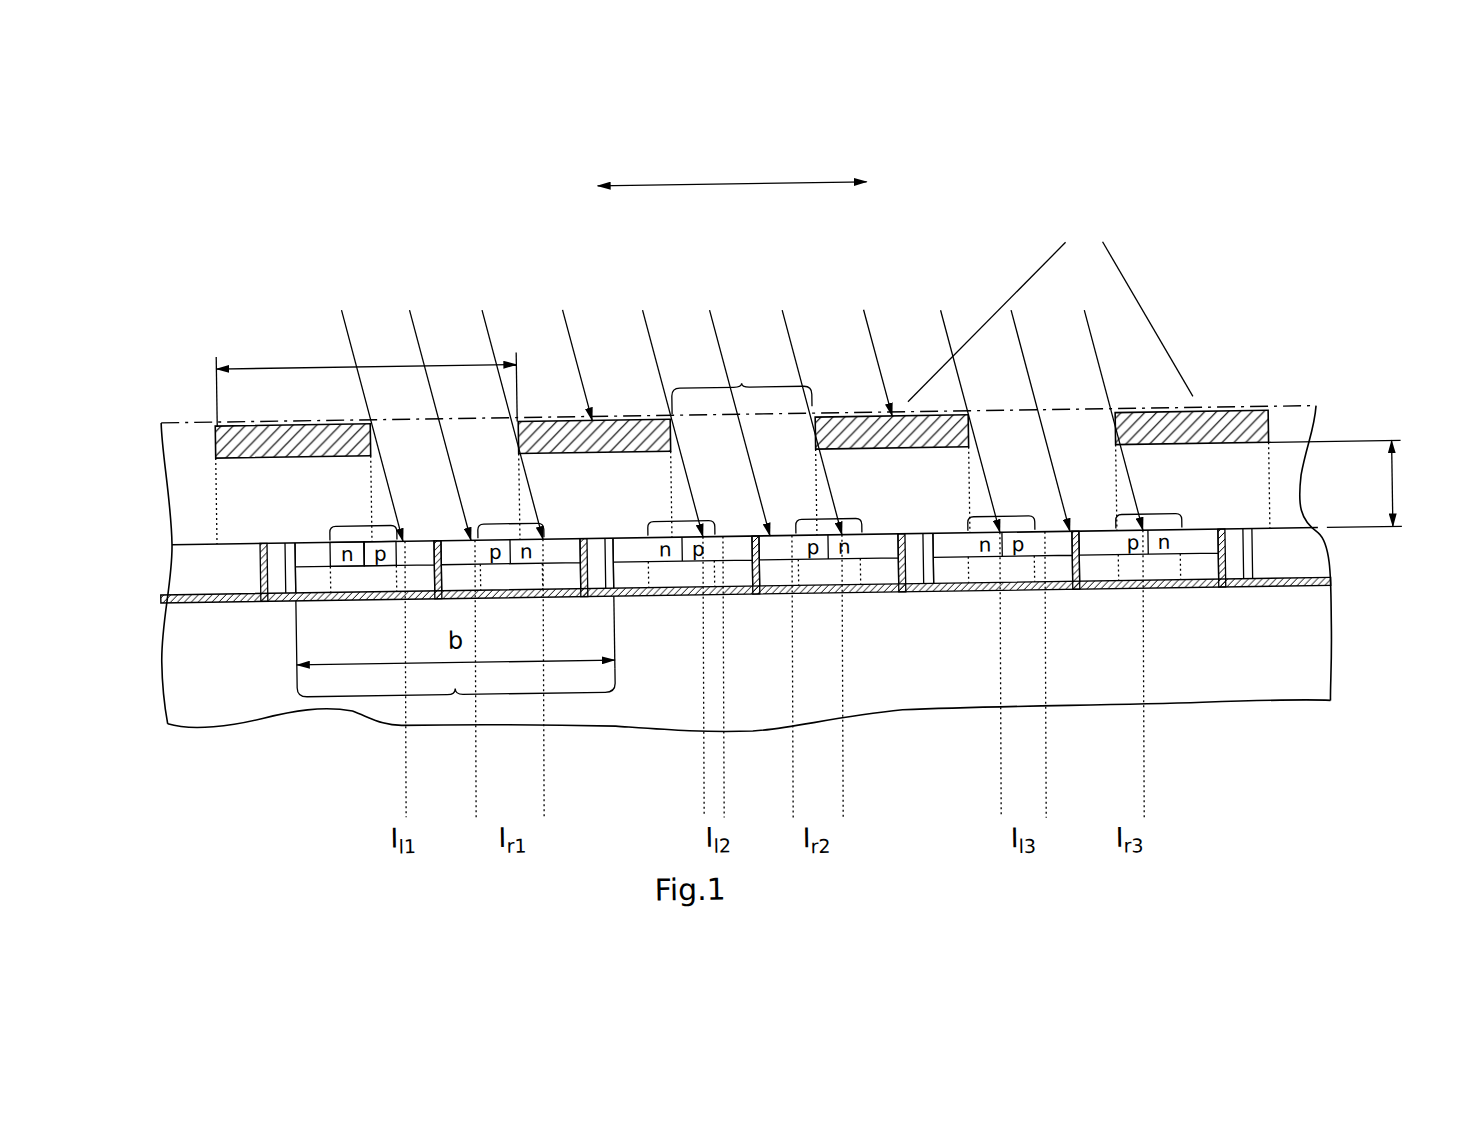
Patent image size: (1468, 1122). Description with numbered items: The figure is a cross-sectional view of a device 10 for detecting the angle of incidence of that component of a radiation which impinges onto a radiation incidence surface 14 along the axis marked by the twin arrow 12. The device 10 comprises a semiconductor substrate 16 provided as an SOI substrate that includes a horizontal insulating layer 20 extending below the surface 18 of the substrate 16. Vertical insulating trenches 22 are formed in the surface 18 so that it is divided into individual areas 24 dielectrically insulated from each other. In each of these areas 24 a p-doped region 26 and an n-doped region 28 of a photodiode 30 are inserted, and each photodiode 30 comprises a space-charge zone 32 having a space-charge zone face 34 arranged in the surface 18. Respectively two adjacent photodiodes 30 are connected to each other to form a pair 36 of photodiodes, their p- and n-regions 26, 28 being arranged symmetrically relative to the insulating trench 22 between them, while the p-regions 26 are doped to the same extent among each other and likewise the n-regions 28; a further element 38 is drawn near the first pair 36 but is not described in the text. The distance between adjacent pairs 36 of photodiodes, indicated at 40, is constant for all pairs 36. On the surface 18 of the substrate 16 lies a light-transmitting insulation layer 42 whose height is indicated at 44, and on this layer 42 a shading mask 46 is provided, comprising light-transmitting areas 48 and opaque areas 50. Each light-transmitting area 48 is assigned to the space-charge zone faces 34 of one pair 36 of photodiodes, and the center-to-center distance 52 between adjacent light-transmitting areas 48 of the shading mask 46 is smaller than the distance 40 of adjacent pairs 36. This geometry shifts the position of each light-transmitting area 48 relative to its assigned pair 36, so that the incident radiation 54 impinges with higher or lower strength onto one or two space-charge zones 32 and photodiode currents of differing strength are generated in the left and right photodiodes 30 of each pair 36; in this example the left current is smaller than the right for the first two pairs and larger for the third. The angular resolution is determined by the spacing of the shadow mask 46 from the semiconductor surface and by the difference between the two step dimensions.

The device 10 is at (1068, 165).
The twin arrow 12 is at (738, 190).
The radiation incidence surface 14 is at (1312, 418).
The semiconductor substrate 16 is at (903, 674).
The surface 18 is at (1302, 530).
The horizontal insulating layer 20 is at (1248, 603).
The vertical insulating trench 22 is at (260, 577).
The individual area 24 is at (367, 581).
The p-doped region 26 is at (412, 547).
The n-doped region 28 is at (313, 560).
The photodiode 30 is at (371, 506).
The space-charge zone 32 is at (367, 527).
The space-charge zone face 34 is at (395, 517).
The pair of photodiodes 36 is at (474, 493).
The first photodiode 38 is at (420, 537).
The distance of adjacent pairs of photodiodes 40 is at (613, 690).
The light-transmitting layer 42 is at (1218, 491).
The height 44 is at (1401, 510).
The shading mask 46 is at (1214, 416).
The light-transmitting area 48 is at (744, 390).
The opaque area 50 is at (894, 442).
The center-to-center distance 52 is at (260, 367).
The incident radiation 54 is at (448, 354).